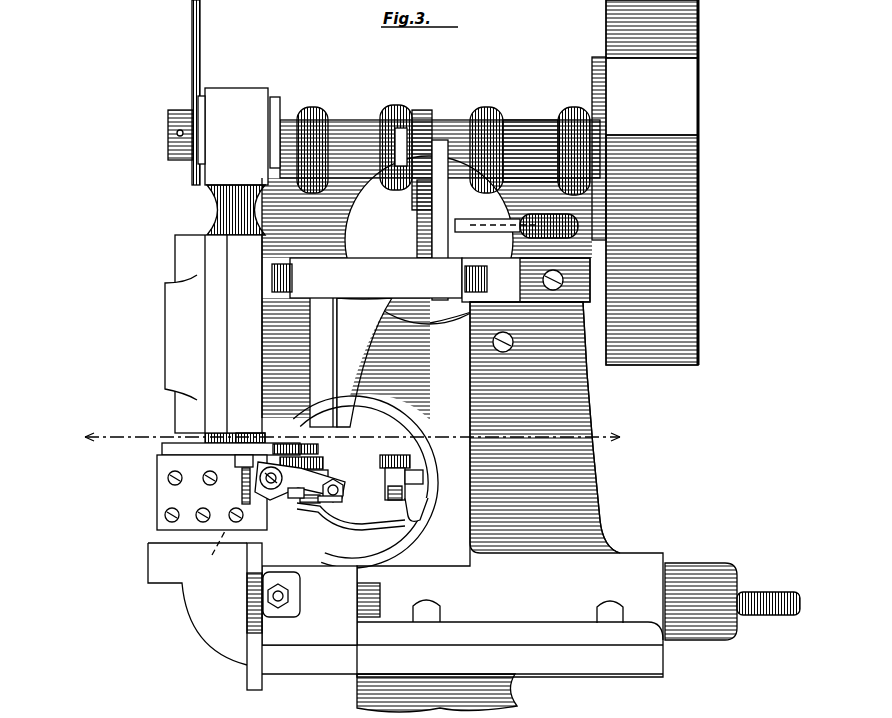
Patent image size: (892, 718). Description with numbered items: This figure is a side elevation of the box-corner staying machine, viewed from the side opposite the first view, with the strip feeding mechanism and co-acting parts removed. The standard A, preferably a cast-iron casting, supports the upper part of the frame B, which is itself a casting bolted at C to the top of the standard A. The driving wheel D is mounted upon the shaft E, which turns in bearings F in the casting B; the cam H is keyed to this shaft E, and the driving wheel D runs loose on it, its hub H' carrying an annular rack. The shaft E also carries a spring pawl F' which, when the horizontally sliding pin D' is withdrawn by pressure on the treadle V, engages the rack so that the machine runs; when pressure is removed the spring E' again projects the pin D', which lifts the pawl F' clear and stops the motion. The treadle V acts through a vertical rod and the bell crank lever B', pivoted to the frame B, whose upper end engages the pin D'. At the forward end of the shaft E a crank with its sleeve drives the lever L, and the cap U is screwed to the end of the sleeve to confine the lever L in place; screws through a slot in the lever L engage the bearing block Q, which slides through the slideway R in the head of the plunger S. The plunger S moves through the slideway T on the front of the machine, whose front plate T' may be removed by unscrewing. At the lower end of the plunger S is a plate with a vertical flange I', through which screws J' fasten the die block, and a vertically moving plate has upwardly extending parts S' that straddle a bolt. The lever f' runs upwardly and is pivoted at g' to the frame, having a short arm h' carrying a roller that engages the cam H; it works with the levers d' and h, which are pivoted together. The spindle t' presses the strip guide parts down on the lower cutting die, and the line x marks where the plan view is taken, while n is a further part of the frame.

The standard A is at (512, 698).
The upper part of the frame B is at (462, 456).
The bell crank lever B' is at (526, 269).
The bolts C is at (440, 612).
The driving wheel D is at (652, 182).
The horizontally sliding pin D' is at (492, 235).
The shaft E is at (526, 141).
The spring E' is at (549, 214).
The bearings F is at (440, 149).
The spring pawl F' is at (530, 151).
The cam H is at (422, 146).
The hub of the driving pulley H' is at (586, 137).
The vertical flange I' is at (245, 492).
The screws J' is at (192, 469).
The lever L is at (190, 68).
The bearing block Q is at (281, 109).
The slideway R is at (249, 488).
The plunger S is at (218, 265).
The upwardly extending parts S' is at (250, 427).
The slideway T is at (218, 334).
The front plate T' is at (185, 401).
The cap U is at (168, 134).
The treadle V is at (250, 460).
The lever d' is at (399, 147).
The lever f' is at (411, 291).
The pivot g' is at (393, 322).
The ring bracket h is at (350, 520).
The short arm h' is at (450, 220).
The bar n is at (247, 607).
The spindle t' is at (221, 535).
The section line x is at (351, 439).